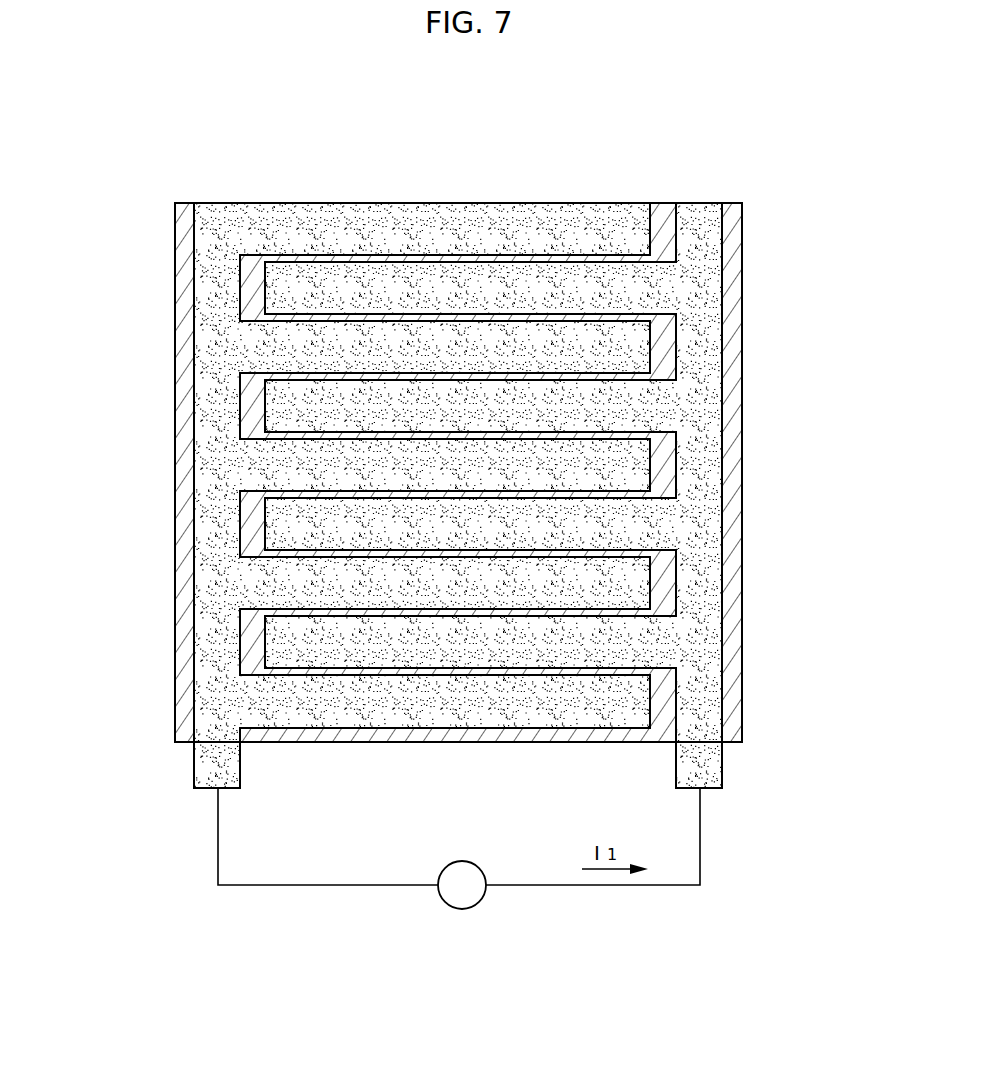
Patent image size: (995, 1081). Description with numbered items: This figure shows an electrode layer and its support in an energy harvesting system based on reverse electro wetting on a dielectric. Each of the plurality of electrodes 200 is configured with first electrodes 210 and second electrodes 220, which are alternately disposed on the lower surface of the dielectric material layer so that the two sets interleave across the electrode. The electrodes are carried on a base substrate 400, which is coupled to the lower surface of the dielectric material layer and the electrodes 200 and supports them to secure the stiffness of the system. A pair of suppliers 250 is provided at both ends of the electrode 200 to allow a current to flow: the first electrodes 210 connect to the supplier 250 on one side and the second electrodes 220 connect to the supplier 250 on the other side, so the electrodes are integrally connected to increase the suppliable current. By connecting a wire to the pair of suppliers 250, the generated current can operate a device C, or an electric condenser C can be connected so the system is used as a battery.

The electrode 200 is at (459, 434).
The first electrode 210 is at (558, 215).
The second electrode 220 is at (272, 290).
The base substrate 400 is at (187, 457).
The supplier 250 is at (203, 763).
The device / electric condenser C is at (460, 910).